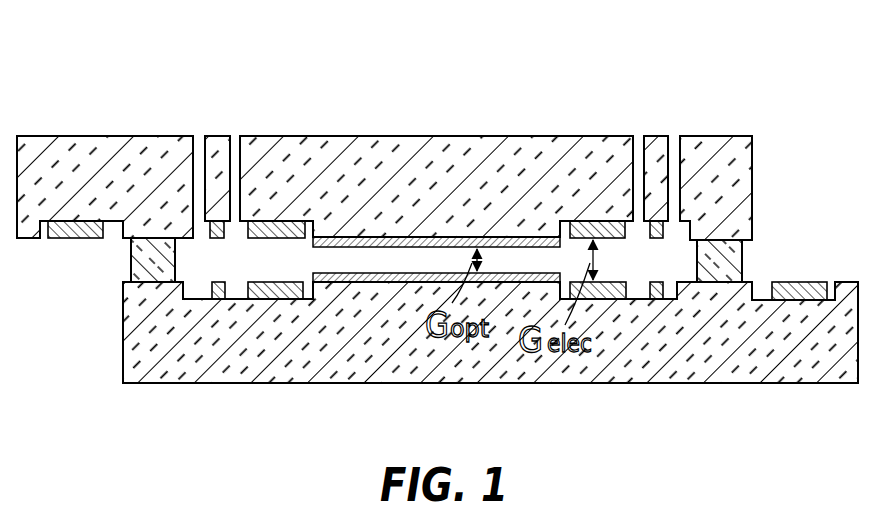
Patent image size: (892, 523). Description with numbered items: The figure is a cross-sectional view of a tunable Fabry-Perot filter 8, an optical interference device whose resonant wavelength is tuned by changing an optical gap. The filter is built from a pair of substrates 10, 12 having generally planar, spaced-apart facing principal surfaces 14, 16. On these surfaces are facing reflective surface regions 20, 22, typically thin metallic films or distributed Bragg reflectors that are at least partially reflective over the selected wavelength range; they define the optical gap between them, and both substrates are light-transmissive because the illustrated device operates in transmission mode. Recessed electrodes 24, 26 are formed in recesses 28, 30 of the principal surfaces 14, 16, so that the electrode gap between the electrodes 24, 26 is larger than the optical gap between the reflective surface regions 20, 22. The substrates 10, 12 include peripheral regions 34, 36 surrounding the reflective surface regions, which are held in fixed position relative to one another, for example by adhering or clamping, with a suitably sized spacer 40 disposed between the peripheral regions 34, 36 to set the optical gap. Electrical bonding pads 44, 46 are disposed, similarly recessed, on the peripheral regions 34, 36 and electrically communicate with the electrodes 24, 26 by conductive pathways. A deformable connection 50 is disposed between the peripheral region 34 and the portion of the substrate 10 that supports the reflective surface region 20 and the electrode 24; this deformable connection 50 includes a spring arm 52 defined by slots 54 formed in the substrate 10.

The tunable Fabry-Perot filter 8 is at (133, 41).
The substrate 10 is at (410, 137).
The substrate 12 is at (280, 375).
The principal surface 14 is at (364, 249).
The principal surface 16 is at (374, 270).
The reflective surface region 20 is at (518, 238).
The reflective surface region 22 is at (490, 283).
The recessed electrode 24 is at (273, 221).
The recessed electrode 26 is at (277, 299).
The recess 28 is at (311, 244).
The recess 30 is at (236, 280).
The peripheral region 34 is at (183, 135).
The peripheral region 36 is at (857, 387).
The spacer 40 is at (131, 259).
The electrical bonding pad 44 is at (73, 240).
The electrical bonding pad 46 is at (800, 281).
The deformable connection 50 is at (652, 94).
The spring arm 52 is at (657, 140).
The slots 54 is at (639, 131).